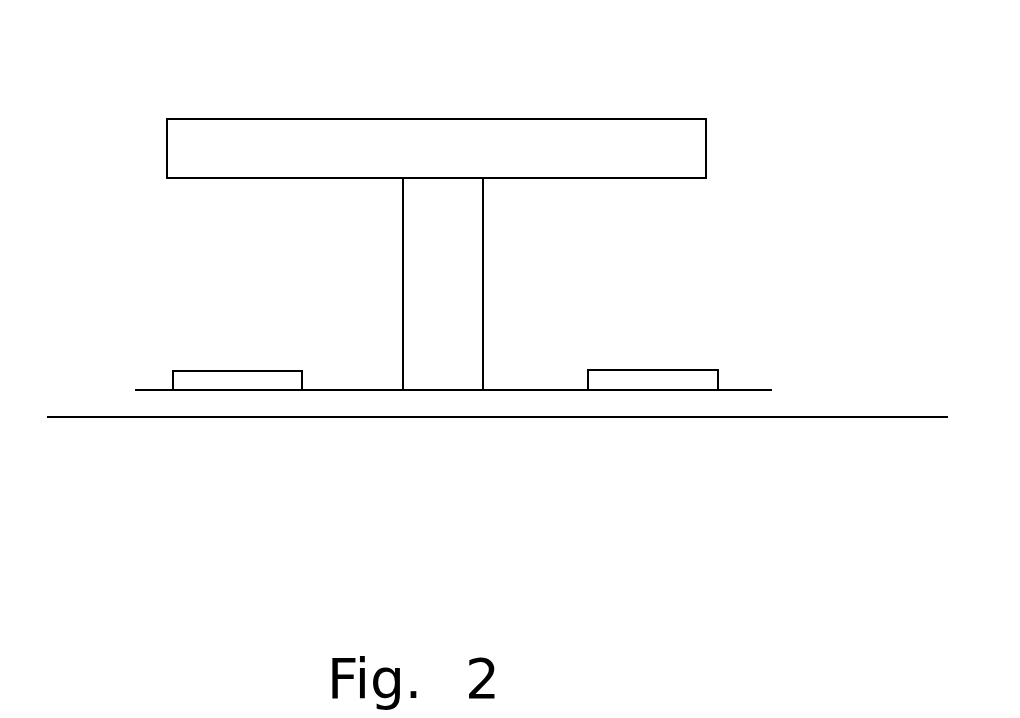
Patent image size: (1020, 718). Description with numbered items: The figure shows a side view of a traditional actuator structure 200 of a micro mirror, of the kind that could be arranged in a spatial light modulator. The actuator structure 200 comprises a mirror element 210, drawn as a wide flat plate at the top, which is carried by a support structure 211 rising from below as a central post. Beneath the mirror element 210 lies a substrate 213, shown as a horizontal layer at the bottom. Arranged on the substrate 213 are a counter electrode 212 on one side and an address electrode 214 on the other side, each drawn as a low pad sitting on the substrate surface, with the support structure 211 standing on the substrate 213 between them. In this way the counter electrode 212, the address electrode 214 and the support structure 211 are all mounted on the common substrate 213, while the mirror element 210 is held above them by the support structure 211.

The actuator structure 200 is at (870, 142).
The mirror element 210 is at (385, 135).
The support structure 211 is at (453, 292).
The counter electrode 212 is at (225, 378).
The substrate 213 is at (353, 402).
The address electrode 214 is at (664, 385).